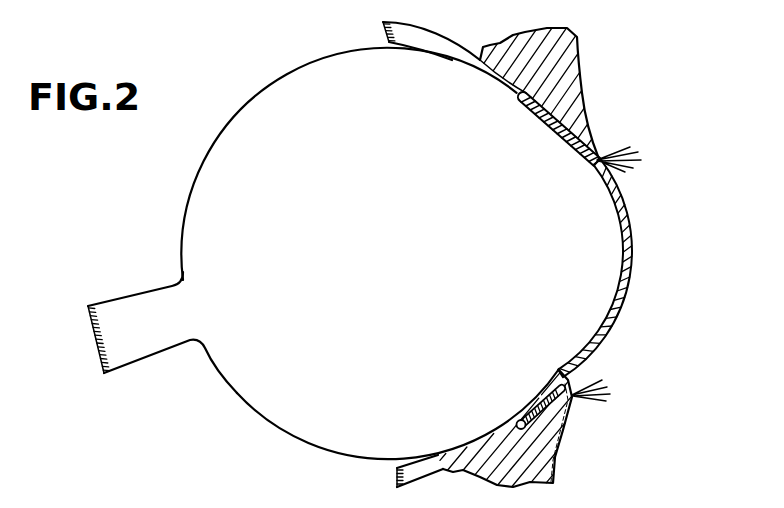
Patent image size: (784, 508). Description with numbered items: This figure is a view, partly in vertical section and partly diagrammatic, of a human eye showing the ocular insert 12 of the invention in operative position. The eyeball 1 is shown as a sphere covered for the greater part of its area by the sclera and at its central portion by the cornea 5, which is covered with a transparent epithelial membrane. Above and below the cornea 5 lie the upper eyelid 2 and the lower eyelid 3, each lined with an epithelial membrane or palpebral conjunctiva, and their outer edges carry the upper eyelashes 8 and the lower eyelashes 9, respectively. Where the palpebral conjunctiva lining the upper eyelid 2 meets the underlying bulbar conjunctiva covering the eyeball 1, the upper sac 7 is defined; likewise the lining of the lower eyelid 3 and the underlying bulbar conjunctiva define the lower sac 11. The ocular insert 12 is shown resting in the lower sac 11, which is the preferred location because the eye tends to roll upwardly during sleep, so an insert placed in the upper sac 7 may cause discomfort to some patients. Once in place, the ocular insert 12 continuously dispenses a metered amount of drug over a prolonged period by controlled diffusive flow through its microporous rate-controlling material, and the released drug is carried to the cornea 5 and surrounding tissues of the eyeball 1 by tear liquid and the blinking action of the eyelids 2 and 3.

The eyeball 1 is at (270, 425).
The upper eyelid 2 is at (588, 122).
The lower eyelid 3 is at (563, 420).
The cornea 5 is at (613, 255).
The upper sac 7 is at (550, 123).
The upper eyelashes 8 is at (612, 157).
The lower eyelashes 9 is at (600, 397).
The lower sac 11 is at (519, 426).
The ocular insert 12 is at (531, 399).